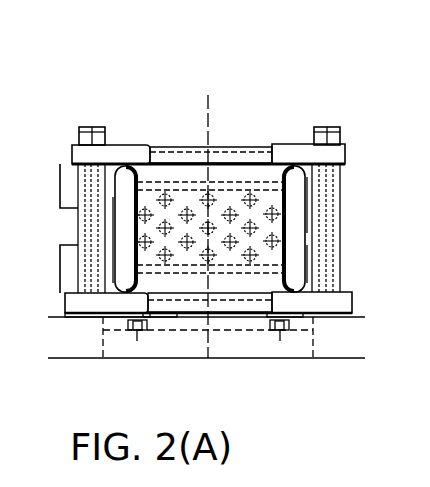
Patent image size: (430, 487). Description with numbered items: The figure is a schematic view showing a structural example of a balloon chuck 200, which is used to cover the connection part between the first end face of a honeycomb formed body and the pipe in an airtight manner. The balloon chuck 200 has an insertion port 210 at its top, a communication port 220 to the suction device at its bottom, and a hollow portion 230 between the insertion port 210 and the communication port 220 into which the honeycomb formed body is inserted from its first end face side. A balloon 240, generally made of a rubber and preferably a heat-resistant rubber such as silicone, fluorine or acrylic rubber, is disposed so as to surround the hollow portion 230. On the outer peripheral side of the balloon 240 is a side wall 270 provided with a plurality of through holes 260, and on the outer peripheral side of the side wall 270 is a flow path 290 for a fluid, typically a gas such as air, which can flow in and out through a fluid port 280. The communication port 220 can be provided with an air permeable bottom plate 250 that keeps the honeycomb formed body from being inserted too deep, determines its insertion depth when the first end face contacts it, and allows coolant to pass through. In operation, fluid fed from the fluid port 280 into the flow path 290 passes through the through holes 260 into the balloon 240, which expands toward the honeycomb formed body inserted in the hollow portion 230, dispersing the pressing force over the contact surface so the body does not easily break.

The balloon chuck 200 is at (107, 108).
The insertion port 210 is at (231, 160).
The communication port 220 is at (238, 303).
The hollow portion 230 is at (188, 193).
The balloon 240 is at (288, 224).
The bottom plate 250 is at (172, 318).
The through holes 260 is at (257, 193).
The side wall 270 is at (150, 173).
The fluid port 280 is at (66, 248).
The flow path 290 is at (311, 181).